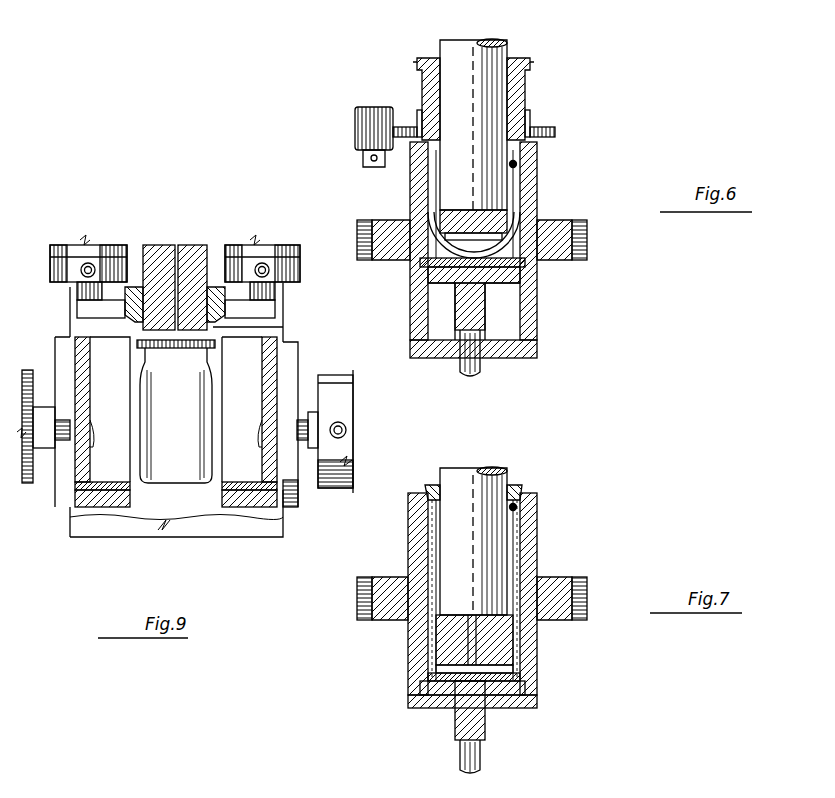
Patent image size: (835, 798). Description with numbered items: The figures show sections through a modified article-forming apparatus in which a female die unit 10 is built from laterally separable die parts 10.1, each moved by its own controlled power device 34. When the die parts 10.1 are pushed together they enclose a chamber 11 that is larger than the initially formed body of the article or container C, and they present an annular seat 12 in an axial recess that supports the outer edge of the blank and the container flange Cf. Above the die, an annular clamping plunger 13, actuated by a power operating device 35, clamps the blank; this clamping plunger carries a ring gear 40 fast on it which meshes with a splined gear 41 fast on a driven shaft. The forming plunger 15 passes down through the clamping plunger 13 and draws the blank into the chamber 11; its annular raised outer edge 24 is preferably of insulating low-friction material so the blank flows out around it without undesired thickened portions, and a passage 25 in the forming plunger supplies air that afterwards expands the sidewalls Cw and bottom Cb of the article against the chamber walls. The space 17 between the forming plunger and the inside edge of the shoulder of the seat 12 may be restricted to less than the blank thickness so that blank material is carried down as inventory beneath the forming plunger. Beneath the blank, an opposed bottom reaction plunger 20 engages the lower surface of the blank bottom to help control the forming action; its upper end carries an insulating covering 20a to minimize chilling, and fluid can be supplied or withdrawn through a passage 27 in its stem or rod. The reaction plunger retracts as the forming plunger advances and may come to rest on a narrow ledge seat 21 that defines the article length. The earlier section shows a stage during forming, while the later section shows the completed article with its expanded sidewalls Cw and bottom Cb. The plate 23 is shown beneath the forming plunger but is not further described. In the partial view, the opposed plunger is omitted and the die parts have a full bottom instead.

In FIG. 6, the forming plunger 15 is at (468, 156).
In FIG. 7, the forming plunger 15 is at (468, 561).
In FIG. 9, the forming plunger 15 is at (169, 279).
In FIG. 6, the annular clamping plunger 13 is at (516, 99).
In FIG. 7, the annular clamping plunger 13 is at (509, 486).
In FIG. 9, the annular clamping plunger 13 is at (143, 290).
In FIG. 6, the splined gear 41 is at (353, 140).
In FIG. 6, the ring gear 40 is at (556, 131).
In FIG. 6, the female die unit 10 is at (545, 151).
In FIG. 7, the female die unit 10 is at (545, 491).
In FIG. 9, the female die unit 10 is at (294, 322).
In FIG. 6, the space between forming plunger and seat shoulder 17 is at (517, 165).
In FIG. 7, the space between forming plunger and seat shoulder 17 is at (520, 507).
In FIG. 9, the space between forming plunger and seat shoulder 17 is at (99, 345).
In FIG. 6, the laterally separable die parts 10.1 is at (421, 193).
In FIG. 7, the laterally separable die parts 10.1 is at (420, 553).
In FIG. 9, the laterally separable die parts 10.1 is at (78, 505).
In FIG. 6, the annular raised outer edge of the forming plunger 24 is at (447, 232).
In FIG. 7, the annular raised outer edge of the forming plunger 24 is at (474, 670).
In FIG. 9, the annular raised outer edge of the forming plunger 24 is at (230, 323).
In FIG. 6, the sealing plate 23 is at (455, 265).
In FIG. 6, the air passage 25 is at (450, 263).
In FIG. 7, the air passage 25 is at (503, 666).
In FIG. 6, the insulating covering 20a is at (510, 258).
In FIG. 7, the insulating covering 20a is at (440, 699).
In FIG. 9, the insulating covering 20a is at (110, 492).
In FIG. 6, the fluid passage 27 is at (473, 313).
In FIG. 7, the fluid passage 27 is at (472, 729).
In FIG. 6, the chamber 11 is at (452, 337).
In FIG. 9, the chamber 11 is at (118, 424).
In FIG. 6, the bottom reaction plunger 20 is at (420, 331).
In FIG. 7, the bottom reaction plunger 20 is at (450, 698).
In FIG. 6, the narrow ledge seat 21 is at (518, 357).
In FIG. 9, the narrow ledge seat 21 is at (113, 495).
In FIG. 7, the article or container C is at (420, 537).
In FIG. 9, the article or container C is at (190, 484).
In FIG. 7, the container sidewalls Cw is at (472, 635).
In FIG. 9, the container sidewalls Cw is at (137, 432).
In FIG. 7, the container bottom Cb is at (497, 703).
In FIG. 9, the power operating device 35 is at (68, 249).
In FIG. 9, the annular seat 12 is at (90, 352).
In FIG. 9, the container flange Cf is at (162, 342).
In FIG. 9, the controlled power device 34 is at (29, 485).